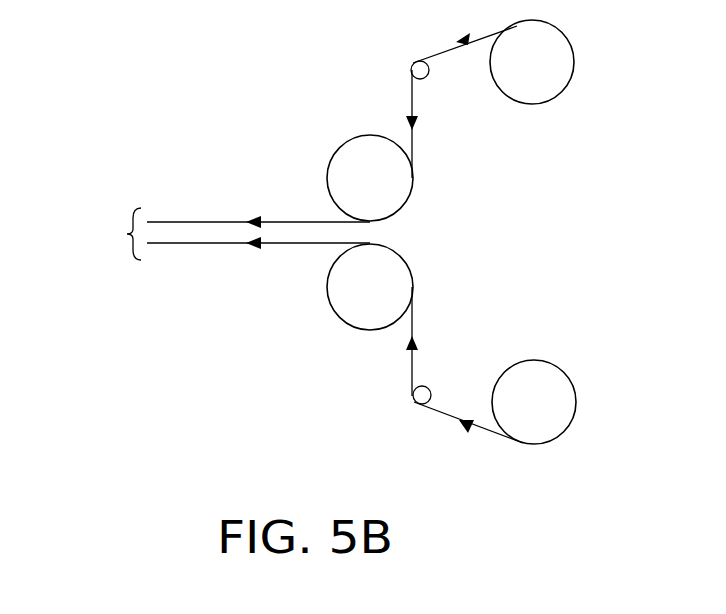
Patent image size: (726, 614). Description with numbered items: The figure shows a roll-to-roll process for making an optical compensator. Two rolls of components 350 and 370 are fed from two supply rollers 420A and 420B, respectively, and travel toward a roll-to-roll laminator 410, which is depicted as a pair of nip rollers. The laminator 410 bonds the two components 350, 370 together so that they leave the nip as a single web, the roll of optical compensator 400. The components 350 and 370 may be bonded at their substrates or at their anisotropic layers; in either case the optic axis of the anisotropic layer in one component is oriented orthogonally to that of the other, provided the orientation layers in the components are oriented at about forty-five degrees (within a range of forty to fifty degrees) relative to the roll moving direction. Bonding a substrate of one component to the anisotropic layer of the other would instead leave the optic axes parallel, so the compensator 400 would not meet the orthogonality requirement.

The roll of component 350 is at (227, 217).
The roll of component 370 is at (220, 255).
The roll of optical compensator 400 is at (93, 234).
The roll-to-roll laminator 410 is at (422, 183).
The supply roller 420A is at (585, 63).
The supply roller 420B is at (585, 363).